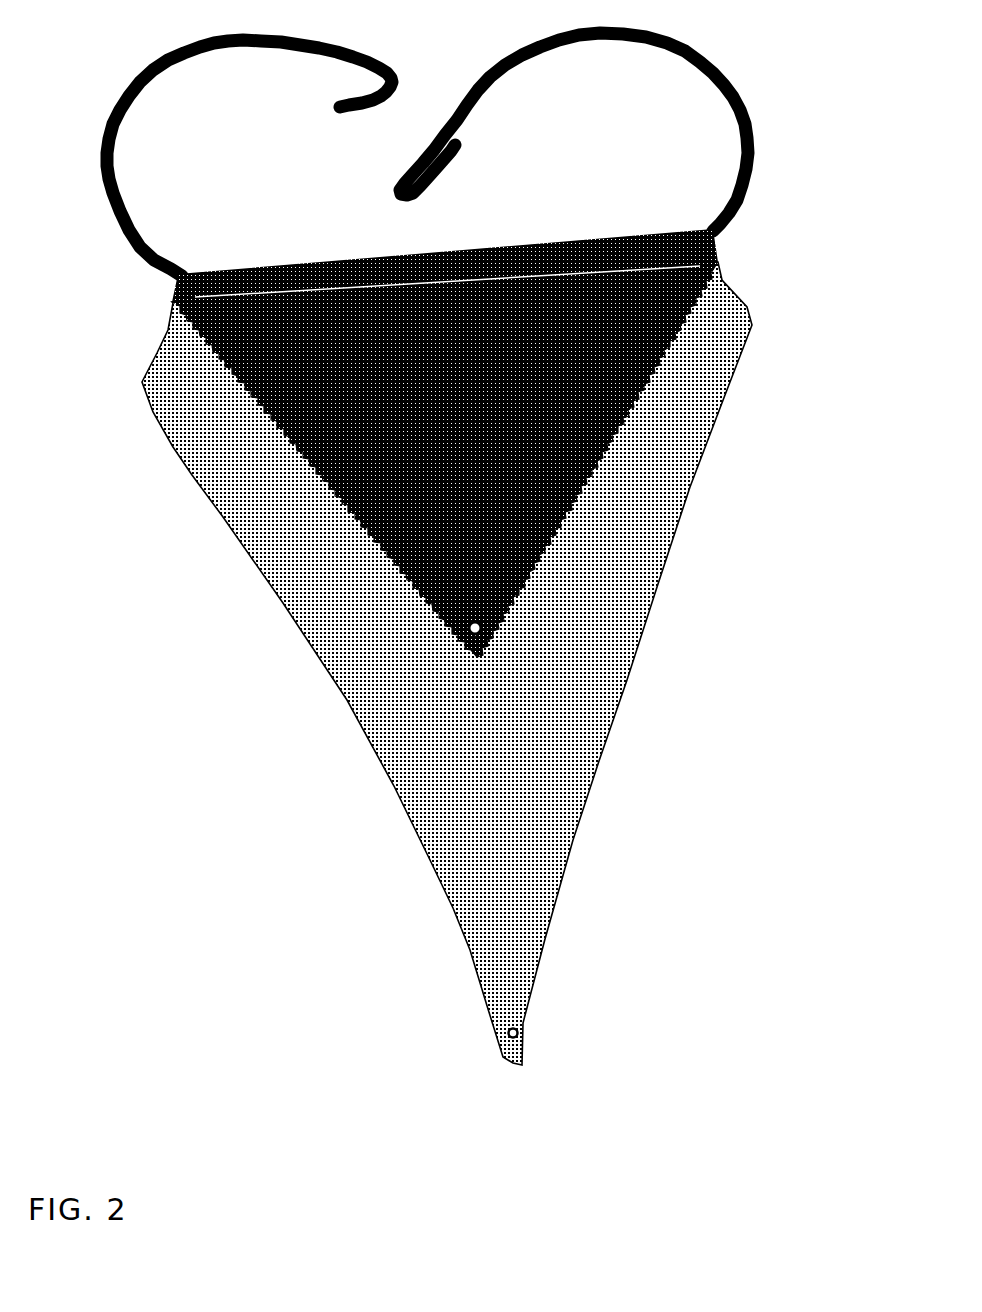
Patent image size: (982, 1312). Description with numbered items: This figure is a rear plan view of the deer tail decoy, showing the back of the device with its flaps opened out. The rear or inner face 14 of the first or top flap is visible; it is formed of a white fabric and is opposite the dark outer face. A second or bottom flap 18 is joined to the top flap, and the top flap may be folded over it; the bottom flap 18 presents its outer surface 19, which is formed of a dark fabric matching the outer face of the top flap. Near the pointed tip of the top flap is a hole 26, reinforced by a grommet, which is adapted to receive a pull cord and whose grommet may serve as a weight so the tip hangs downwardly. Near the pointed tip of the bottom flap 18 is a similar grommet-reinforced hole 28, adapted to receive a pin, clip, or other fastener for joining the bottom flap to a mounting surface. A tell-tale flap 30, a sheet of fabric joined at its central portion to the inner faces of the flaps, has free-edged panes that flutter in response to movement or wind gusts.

The rear or inner face 14 is at (535, 943).
The second or bottom flap 18 is at (680, 302).
The outer surface 19 is at (613, 422).
The hole 26 is at (520, 1040).
The hole 28 is at (497, 628).
The tell-tale flap 30 is at (560, 767).